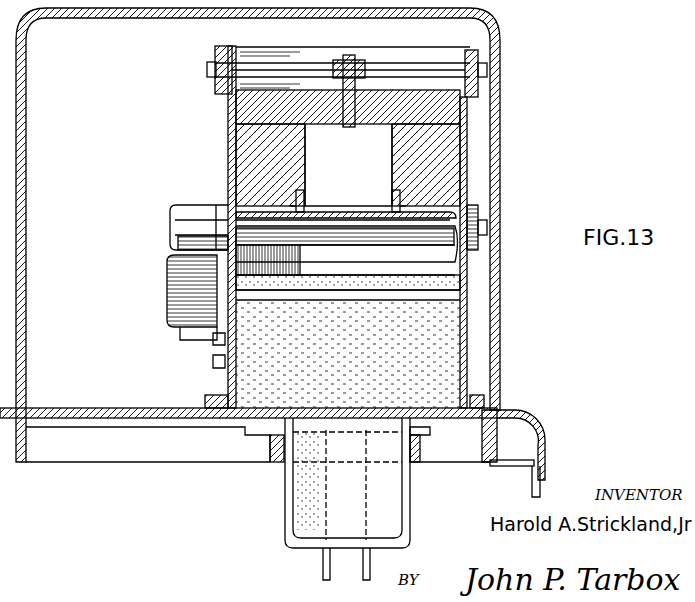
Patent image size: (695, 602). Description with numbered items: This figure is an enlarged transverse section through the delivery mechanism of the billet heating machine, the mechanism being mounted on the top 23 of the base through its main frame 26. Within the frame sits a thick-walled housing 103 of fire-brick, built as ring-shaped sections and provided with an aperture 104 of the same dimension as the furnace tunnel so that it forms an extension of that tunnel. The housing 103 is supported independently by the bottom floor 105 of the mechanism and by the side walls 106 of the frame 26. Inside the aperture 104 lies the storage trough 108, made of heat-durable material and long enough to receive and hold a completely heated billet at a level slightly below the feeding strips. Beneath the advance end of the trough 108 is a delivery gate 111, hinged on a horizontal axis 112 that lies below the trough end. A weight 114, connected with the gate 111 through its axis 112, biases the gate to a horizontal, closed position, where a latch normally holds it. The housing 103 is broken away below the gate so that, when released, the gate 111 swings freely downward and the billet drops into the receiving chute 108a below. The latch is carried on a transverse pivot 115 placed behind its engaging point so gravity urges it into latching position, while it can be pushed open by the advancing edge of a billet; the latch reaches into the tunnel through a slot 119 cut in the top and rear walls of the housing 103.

The top of the base 23 is at (90, 408).
The main frame 26 is at (228, 168).
The thick-walled housing 103 is at (386, 120).
The aperture 104 is at (320, 124).
The bottom floor 105 is at (440, 195).
The side walls 106 is at (462, 143).
The storage trough 108 is at (357, 204).
The receiving chute 108a is at (290, 505).
The delivery gate 111 is at (410, 218).
The horizontal axis 112 is at (170, 229).
The weight 114 is at (167, 306).
The transverse pivot 115 is at (445, 70).
The slot 119 is at (355, 107).